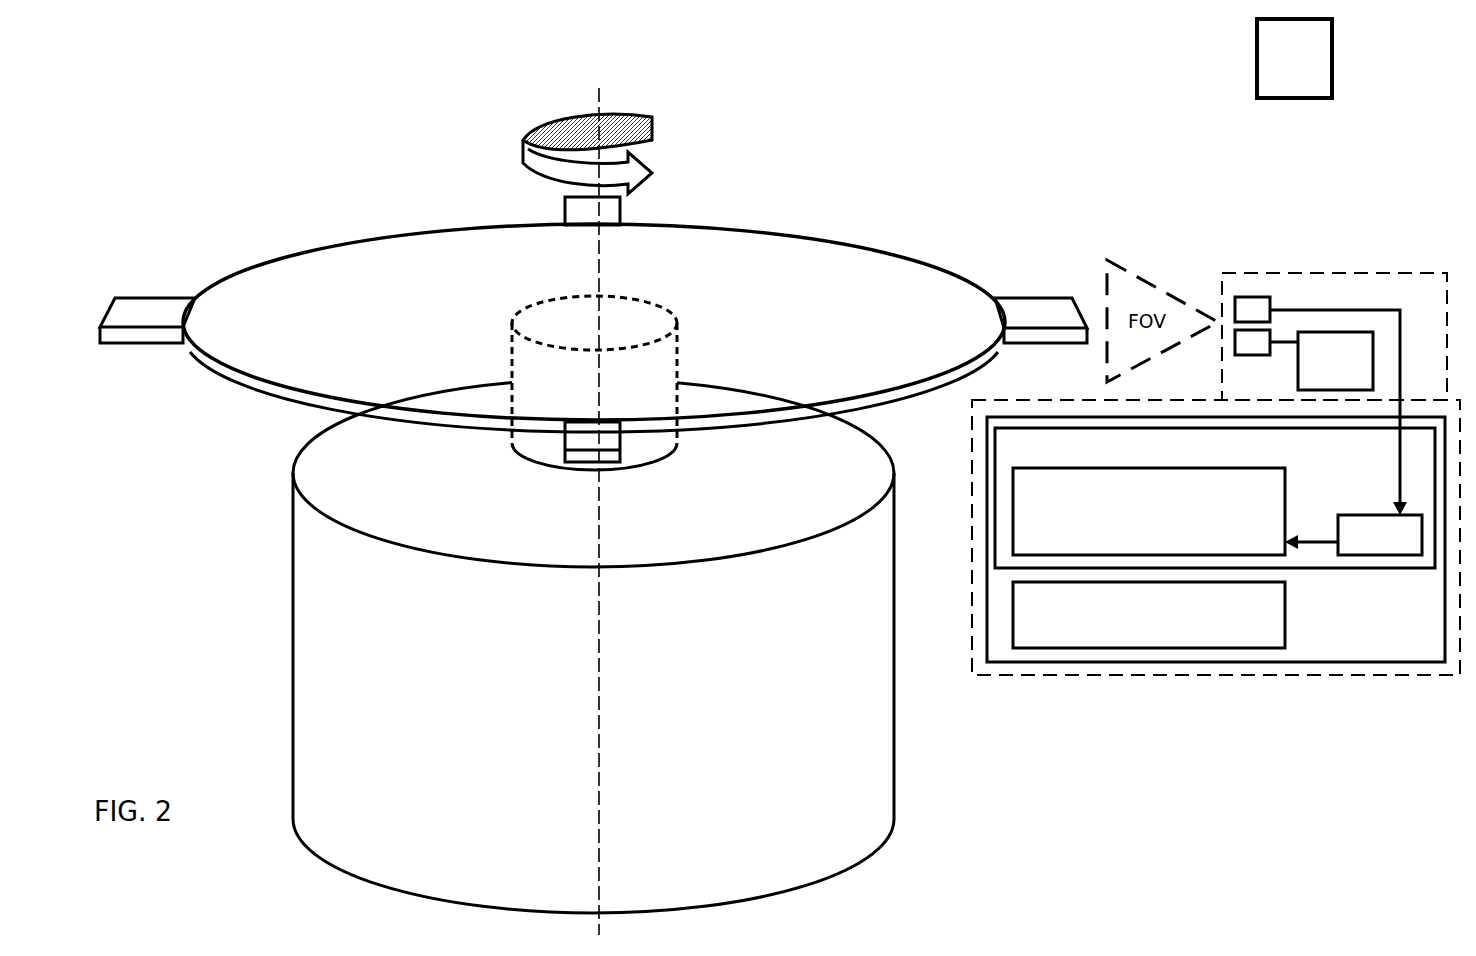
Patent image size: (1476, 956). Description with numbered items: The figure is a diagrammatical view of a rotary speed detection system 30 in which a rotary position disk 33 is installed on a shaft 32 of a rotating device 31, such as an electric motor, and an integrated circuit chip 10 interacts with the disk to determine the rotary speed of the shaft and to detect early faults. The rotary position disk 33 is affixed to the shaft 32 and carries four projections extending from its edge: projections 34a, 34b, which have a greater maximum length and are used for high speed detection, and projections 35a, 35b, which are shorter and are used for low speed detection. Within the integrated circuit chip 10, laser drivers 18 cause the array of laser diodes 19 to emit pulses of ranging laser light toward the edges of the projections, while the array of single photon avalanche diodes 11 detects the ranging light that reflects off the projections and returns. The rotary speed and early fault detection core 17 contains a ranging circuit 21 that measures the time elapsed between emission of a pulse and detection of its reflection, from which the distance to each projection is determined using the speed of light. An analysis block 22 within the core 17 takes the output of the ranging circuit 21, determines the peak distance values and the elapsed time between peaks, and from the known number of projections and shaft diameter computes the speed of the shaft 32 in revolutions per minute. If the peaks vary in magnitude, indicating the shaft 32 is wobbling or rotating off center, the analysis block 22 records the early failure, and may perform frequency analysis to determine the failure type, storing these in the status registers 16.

The integrated circuit chip 10 is at (1000, 676).
The array of single photon avalanche diodes 11 is at (1321, 406).
The registers 16 is at (1013, 613).
The rotary speed and early fault detection core 17 is at (995, 463).
The laser drivers 18 is at (1298, 380).
The array of laser diodes 19 is at (1266, 342).
The ranging circuit 21 is at (1360, 556).
The analysis block 22 is at (1013, 528).
The rotary machine 30 is at (330, 66).
The rotating device 31 is at (292, 562).
The shaft 32 is at (509, 446).
The rotary position disk 33 is at (250, 388).
The projection 34a is at (147, 343).
The projection 34b is at (1017, 297).
The projection 35a is at (565, 210).
The projection 35b is at (640, 463).